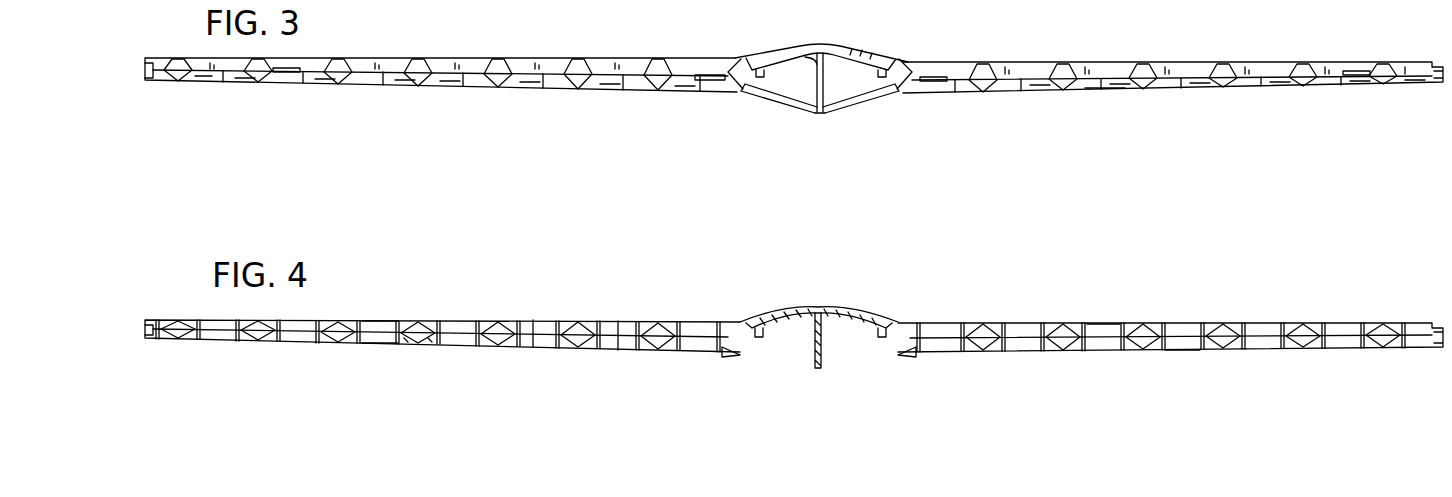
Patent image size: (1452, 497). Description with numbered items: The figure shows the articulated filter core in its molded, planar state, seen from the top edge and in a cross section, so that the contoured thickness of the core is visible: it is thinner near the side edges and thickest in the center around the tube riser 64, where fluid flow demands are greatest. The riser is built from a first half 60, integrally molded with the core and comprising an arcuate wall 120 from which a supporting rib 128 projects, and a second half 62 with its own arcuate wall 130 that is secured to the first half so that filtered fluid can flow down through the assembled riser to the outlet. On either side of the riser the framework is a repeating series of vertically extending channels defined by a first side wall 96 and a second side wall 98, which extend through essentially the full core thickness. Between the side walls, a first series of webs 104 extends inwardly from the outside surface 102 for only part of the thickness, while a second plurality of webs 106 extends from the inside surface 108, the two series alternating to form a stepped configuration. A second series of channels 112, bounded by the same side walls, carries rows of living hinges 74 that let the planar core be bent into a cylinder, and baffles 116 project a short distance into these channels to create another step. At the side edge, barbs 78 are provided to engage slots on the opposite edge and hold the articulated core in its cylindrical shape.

In FIG. 3, the first half of tube riser 60 is at (783, 57).
In FIG. 4, the first half of tube riser 60 is at (803, 312).
In FIG. 3, the second half of tube riser 62 is at (847, 115).
In FIG. 3, the tube riser 64 is at (776, 112).
In FIG. 3, the living hinges 74 is at (420, 58).
In FIG. 4, the living hinges 74 is at (500, 322).
In FIG. 3, the barbs 78 is at (153, 78).
In FIG. 4, the barbs 78 is at (143, 338).
In FIG. 4, the first side wall 96 is at (533, 322).
In FIG. 4, the second side wall 98 is at (618, 320).
In FIG. 3, the outside surface 102 is at (1012, 63).
In FIG. 4, the outside surface 102 is at (1097, 322).
In FIG. 4, the first series of webs 104 is at (385, 322).
In FIG. 4, the second plurality of webs 106 is at (370, 343).
In FIG. 3, the inside surface 108 is at (1100, 95).
In FIG. 4, the inside surface 108 is at (1173, 353).
In FIG. 3, the second series of vertically extending channels 112 is at (497, 65).
In FIG. 4, the second series of vertically extending channels 112 is at (578, 340).
In FIG. 4, the baffles 116 is at (430, 340).
In FIG. 3, the arcuate wall 120 is at (855, 60).
In FIG. 4, the arcuate wall 120 is at (848, 312).
In FIG. 3, the supporting rib 128 is at (815, 72).
In FIG. 4, the supporting rib 128 is at (823, 347).
In FIG. 3, the arcuate wall of second half 130 is at (812, 117).